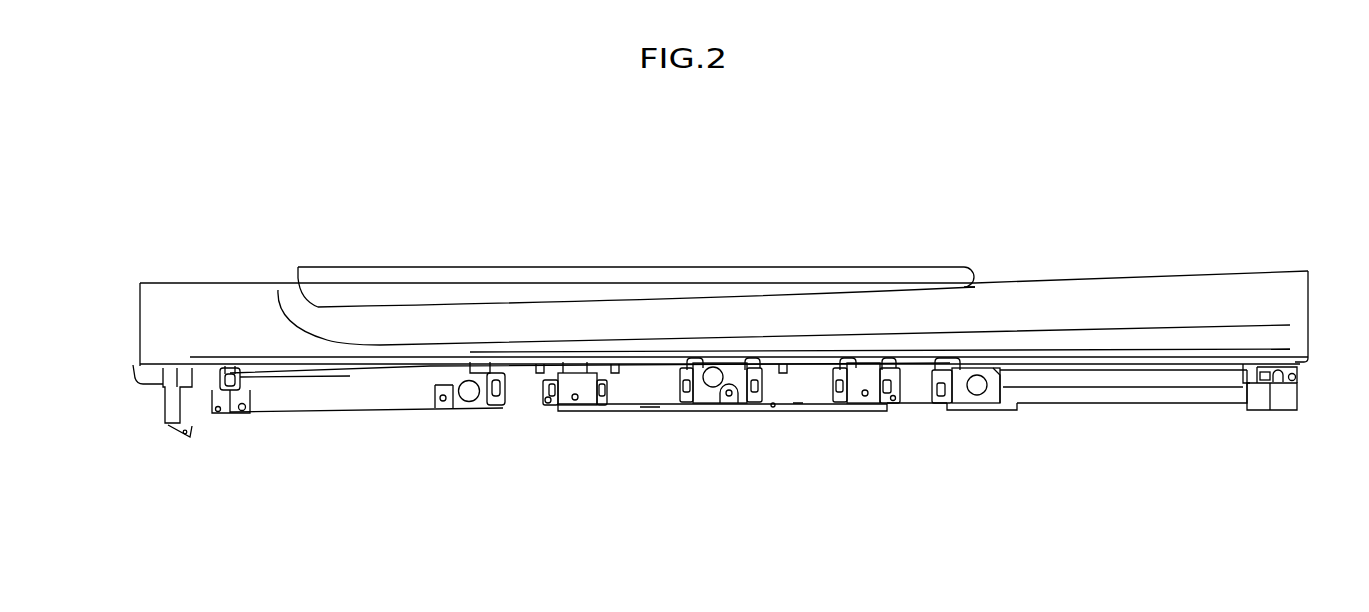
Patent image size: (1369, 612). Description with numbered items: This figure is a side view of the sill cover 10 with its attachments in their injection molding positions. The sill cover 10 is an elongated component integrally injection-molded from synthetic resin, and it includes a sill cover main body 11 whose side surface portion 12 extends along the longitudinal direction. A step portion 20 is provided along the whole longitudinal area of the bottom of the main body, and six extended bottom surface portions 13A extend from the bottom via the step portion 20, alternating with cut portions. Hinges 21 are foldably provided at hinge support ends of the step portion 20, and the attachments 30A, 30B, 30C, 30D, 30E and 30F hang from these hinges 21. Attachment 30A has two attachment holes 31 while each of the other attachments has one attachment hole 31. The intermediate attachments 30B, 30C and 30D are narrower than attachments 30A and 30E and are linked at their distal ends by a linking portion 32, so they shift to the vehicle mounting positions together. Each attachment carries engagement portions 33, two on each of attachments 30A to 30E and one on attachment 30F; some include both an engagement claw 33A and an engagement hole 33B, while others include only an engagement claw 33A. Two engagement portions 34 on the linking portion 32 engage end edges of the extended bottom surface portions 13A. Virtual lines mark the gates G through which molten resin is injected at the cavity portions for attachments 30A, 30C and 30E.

The sill cover 10 is at (318, 213).
The sill cover main body 11 is at (1082, 278).
The side surface portion 12 is at (1217, 293).
The extended bottom surface portion 13A is at (180, 366).
The step portion 20 is at (302, 412).
The hinge 21 is at (345, 411).
The attachment 30A is at (377, 398).
The attachment 30B is at (587, 407).
The attachment 30C is at (703, 407).
The attachment 30D is at (865, 362).
The attachment 30E is at (1107, 373).
The attachment 30F is at (162, 427).
The attachment hole 31 is at (183, 436).
The linking portion 32 is at (637, 412).
The engagement portion 33 is at (198, 414).
The engagement claw 33A is at (230, 366).
The engagement hole 33B is at (510, 360).
The engagement portion 34 is at (663, 412).
The gate G is at (462, 362).